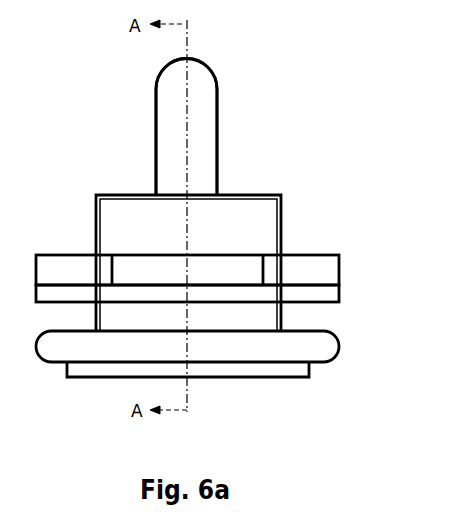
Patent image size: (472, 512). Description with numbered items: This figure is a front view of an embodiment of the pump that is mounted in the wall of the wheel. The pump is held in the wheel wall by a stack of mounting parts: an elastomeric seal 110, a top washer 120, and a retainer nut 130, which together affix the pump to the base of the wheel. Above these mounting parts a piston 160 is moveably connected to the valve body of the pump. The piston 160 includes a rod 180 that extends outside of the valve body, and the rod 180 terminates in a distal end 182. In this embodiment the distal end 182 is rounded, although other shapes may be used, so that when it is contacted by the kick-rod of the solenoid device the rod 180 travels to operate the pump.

The elastomeric seal 110 is at (338, 346).
The top washer 120 is at (339, 292).
The retainer nut 130 is at (339, 270).
The piston 160 is at (149, 88).
The rod 180 is at (217, 142).
The distal end 182 is at (188, 60).